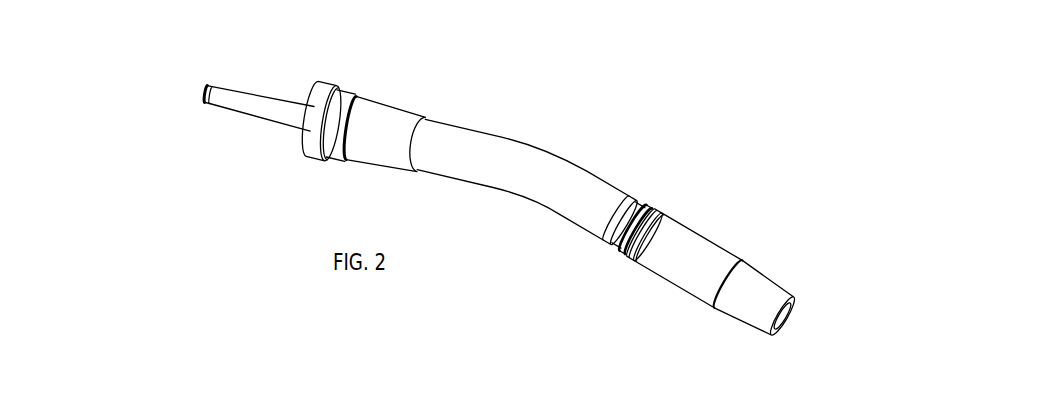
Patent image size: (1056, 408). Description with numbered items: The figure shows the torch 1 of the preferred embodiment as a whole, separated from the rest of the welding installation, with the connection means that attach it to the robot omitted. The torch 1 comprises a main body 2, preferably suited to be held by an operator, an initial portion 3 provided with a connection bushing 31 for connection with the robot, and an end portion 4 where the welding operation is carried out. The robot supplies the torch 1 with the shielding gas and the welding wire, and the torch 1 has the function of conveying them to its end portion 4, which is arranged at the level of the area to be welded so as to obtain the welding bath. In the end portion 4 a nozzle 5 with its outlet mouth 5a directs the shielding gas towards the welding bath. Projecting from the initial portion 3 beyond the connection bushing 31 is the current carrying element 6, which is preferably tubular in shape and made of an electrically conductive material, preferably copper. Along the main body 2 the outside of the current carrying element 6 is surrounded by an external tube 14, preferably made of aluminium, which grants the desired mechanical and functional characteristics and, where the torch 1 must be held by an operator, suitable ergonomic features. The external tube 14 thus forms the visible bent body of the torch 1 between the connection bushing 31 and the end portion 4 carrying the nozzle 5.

The torch 1 is at (915, 168).
The main body 2 is at (643, 130).
The initial portion 3 is at (485, 77).
The end portion 4 is at (770, 213).
The nozzle 5 is at (763, 293).
The outlet mouth 5a is at (798, 325).
The current carrying element 6 is at (250, 100).
The external tube 14 is at (535, 163).
The connection bushing 31 is at (388, 118).